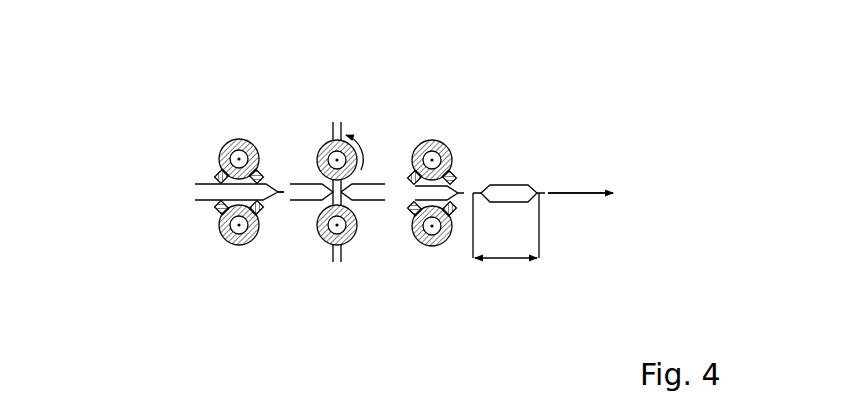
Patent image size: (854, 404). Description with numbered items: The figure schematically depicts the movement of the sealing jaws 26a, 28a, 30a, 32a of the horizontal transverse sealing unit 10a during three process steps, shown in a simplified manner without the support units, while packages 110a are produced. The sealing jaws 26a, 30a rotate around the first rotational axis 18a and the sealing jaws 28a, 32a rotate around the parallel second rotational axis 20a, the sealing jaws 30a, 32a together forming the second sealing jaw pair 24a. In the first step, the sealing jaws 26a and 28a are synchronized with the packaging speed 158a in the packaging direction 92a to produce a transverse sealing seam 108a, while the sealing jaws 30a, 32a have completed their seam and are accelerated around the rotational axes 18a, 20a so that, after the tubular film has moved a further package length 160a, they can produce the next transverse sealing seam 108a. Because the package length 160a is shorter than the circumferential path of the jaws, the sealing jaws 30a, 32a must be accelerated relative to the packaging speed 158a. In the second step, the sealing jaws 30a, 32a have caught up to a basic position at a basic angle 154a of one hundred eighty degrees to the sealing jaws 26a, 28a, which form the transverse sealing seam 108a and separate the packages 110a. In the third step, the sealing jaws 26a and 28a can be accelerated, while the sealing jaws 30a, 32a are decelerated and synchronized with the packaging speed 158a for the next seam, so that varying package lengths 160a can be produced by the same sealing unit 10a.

The horizontal transverse sealing unit 10a is at (129, 117).
The first rotational axis 18a is at (225, 139).
The second rotational axis 20a is at (228, 247).
The second sealing jaw pair 24a is at (281, 177).
The sealing jaw 26a is at (219, 175).
The sealing jaw 28a is at (219, 210).
The sealing jaw 30a is at (262, 173).
The sealing jaw 32a is at (258, 212).
The packaging direction 92a is at (593, 192).
The transverse sealing seam 108a is at (284, 197).
The package 110a is at (511, 189).
The basic angle 154a is at (354, 183).
The packaging speed 158a is at (572, 195).
The package length 160a is at (505, 260).